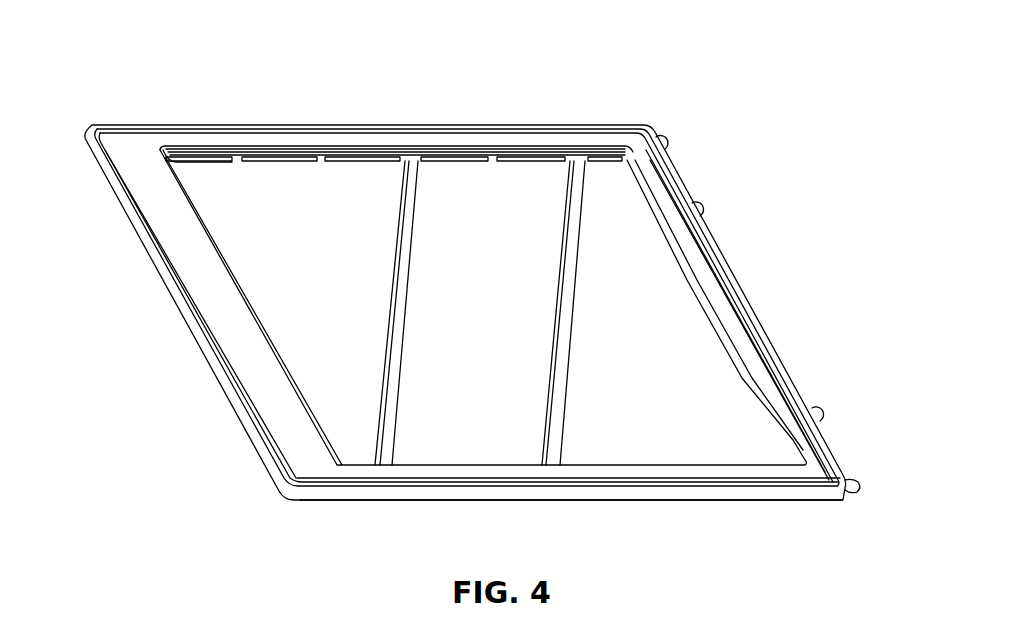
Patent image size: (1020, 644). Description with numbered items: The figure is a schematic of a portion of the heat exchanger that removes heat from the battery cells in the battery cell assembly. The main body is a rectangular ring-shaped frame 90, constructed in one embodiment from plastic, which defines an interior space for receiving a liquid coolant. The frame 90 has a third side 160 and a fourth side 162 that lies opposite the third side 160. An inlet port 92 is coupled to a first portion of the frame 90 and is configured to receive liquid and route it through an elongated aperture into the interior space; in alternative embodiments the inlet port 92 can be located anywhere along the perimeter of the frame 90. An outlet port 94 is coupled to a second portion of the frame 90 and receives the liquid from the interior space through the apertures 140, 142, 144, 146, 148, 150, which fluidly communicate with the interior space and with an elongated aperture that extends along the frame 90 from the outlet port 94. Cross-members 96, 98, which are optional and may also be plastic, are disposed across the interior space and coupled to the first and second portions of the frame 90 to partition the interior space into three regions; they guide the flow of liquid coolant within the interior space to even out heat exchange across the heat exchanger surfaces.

The rectangular ring-shaped frame 90 is at (554, 114).
The inlet port 92 is at (858, 479).
The outlet port 94 is at (668, 140).
The cross-member 96 is at (402, 350).
The cross-member 98 is at (575, 316).
The aperture 140 is at (207, 162).
The aperture 142 is at (277, 161).
The aperture 144 is at (370, 161).
The aperture 146 is at (452, 162).
The aperture 148 is at (535, 162).
The aperture 150 is at (603, 160).
The third side 160 is at (753, 356).
The fourth side 162 is at (683, 502).